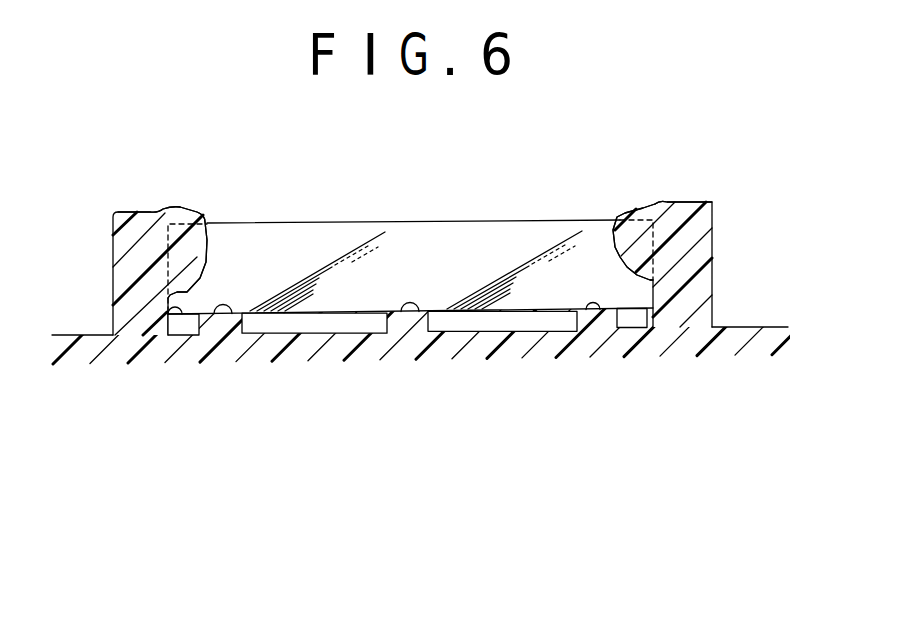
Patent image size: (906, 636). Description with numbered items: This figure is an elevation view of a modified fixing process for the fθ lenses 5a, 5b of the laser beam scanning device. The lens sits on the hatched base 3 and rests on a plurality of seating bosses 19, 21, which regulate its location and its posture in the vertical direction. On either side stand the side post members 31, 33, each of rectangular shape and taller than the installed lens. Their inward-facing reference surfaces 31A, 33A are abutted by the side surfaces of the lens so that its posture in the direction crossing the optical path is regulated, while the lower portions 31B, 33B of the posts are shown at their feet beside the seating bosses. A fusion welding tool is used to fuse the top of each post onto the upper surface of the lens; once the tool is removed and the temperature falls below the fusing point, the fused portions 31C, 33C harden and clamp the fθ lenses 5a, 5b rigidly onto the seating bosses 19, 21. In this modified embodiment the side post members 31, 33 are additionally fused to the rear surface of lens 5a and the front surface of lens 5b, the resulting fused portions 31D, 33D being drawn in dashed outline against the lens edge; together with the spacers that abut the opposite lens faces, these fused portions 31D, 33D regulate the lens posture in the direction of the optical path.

The substrate 3 is at (750, 327).
The fθ lens 5a is at (410, 227).
The fθ lens 5b is at (463, 221).
The seating boss 19 is at (404, 363).
The seating boss 21 is at (222, 306).
The side post member 31 is at (416, 275).
The side post member 33 is at (112, 287).
The reference surface 31A is at (696, 358).
The reference surface 33A is at (648, 312).
The bottom portion of frame member 31B is at (130, 364).
The bottom portion of frame member 33B is at (168, 337).
The fused portion 31C is at (445, 174).
The fused portion 33C is at (160, 210).
The fused portion 31D is at (411, 239).
The fused portion 33D is at (188, 224).